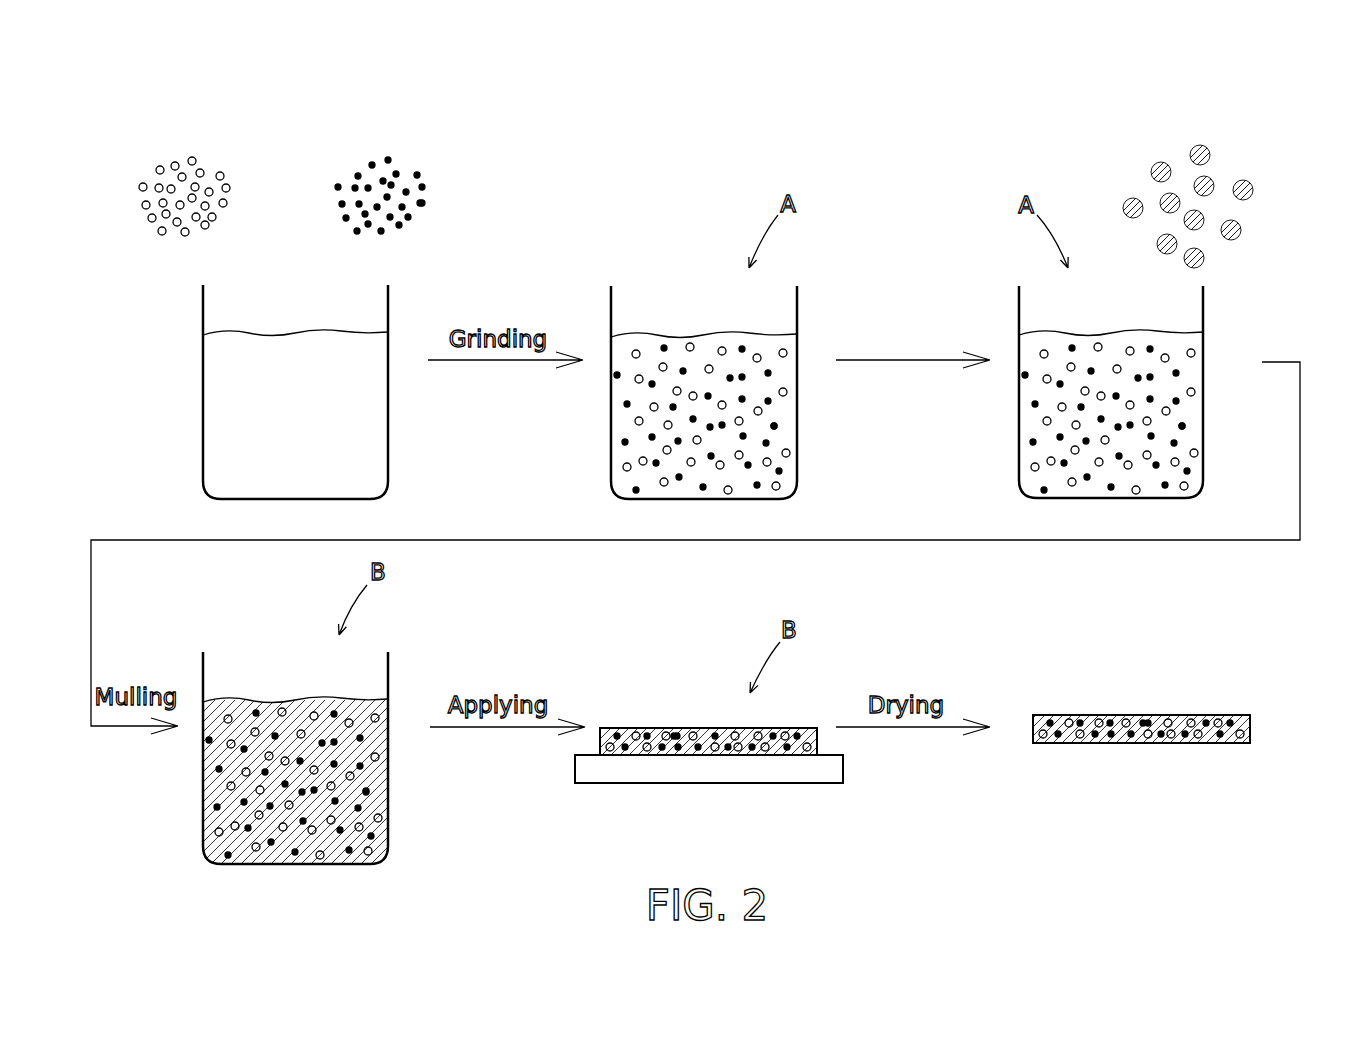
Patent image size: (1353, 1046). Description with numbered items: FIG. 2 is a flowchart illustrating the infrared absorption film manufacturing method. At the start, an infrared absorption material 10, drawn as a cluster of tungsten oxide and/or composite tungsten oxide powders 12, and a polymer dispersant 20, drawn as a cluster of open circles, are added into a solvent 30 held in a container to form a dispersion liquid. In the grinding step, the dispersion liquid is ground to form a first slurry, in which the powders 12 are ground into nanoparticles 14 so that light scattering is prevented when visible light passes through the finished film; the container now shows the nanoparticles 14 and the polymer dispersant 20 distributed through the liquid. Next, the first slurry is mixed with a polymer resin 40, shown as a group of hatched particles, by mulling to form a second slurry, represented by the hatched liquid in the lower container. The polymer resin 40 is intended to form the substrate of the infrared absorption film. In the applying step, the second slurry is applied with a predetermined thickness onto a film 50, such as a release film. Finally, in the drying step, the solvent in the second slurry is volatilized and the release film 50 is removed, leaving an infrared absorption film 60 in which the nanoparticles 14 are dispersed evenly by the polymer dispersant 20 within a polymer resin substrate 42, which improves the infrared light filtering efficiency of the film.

The infrared absorption material 10 is at (414, 152).
The tungsten oxide and/or composite tungsten oxide powders 12 is at (422, 203).
The nanoparticles 14 is at (776, 426).
The polymer dispersant 20 is at (219, 147).
The solvent 30 is at (378, 433).
The polymer resin 40 is at (1240, 168).
The polymer resin substrate 42 is at (1123, 745).
The film 50 is at (702, 778).
The infrared absorption film 60 is at (1139, 702).